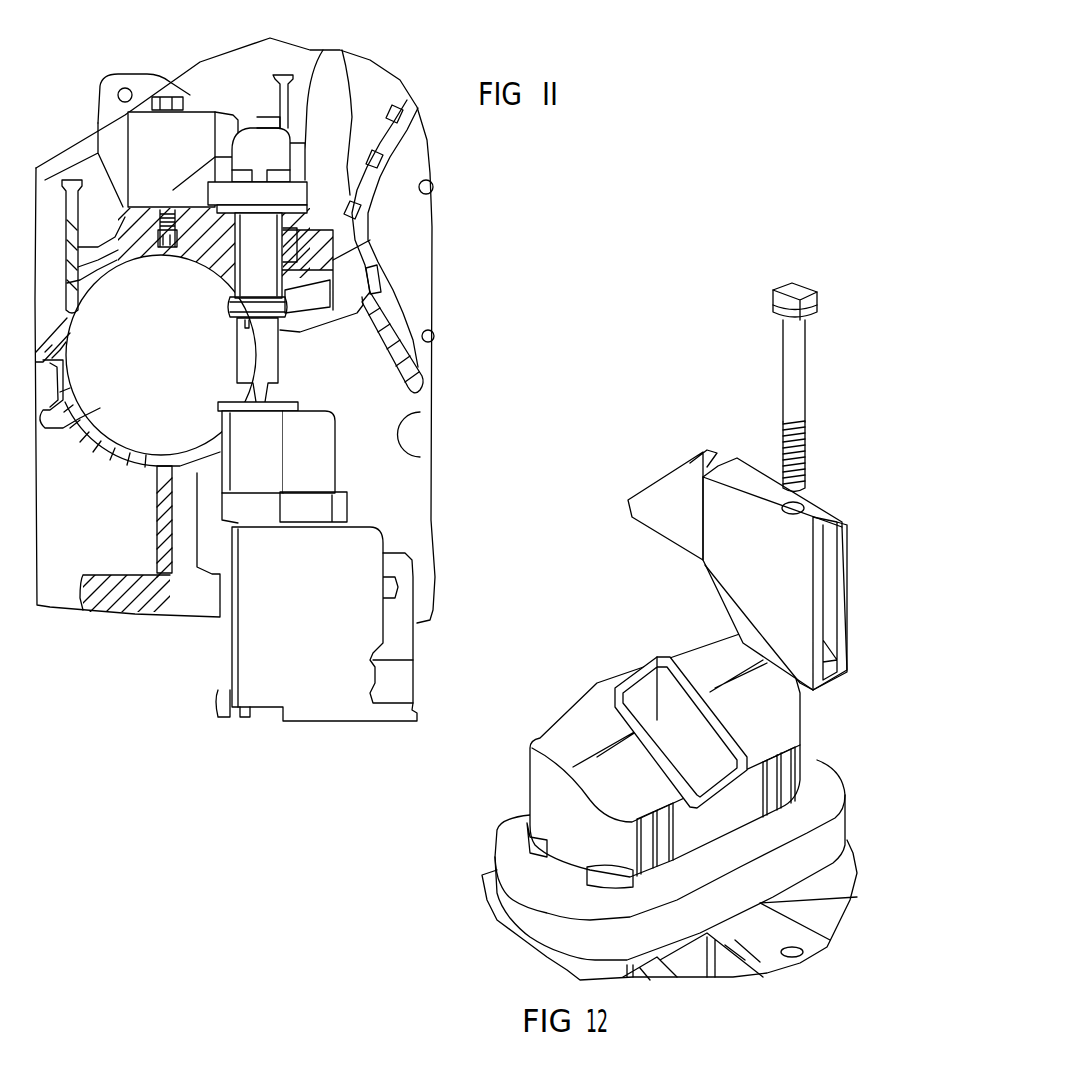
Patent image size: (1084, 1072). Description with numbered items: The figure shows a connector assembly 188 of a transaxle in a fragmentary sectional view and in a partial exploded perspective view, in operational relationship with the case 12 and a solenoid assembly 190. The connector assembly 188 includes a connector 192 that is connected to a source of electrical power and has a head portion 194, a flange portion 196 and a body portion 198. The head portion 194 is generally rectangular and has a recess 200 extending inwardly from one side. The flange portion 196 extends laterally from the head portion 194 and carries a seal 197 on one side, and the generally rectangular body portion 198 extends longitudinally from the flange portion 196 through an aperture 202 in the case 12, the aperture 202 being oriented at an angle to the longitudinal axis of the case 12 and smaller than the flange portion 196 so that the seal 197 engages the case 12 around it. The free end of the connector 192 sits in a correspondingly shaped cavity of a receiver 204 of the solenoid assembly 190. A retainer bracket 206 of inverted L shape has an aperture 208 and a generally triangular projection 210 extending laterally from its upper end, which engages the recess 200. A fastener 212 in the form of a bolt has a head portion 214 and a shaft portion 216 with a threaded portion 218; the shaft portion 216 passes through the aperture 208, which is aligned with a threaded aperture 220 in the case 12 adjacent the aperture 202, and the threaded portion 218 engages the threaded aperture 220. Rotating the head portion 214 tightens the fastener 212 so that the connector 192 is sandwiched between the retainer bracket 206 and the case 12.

In FIG. 11, the case 12 is at (119, 206).
In FIG. 11, the connector assembly 188 is at (214, 104).
In FIG. 11, the solenoid assembly 190 is at (250, 643).
In FIG. 11, the connector 192 is at (290, 140).
In FIG. 12, the connector 192 is at (565, 722).
In FIG. 11, the head portion 194 is at (307, 147).
In FIG. 12, the head portion 194 is at (543, 793).
In FIG. 11, the flange portion 196 is at (300, 190).
In FIG. 12, the flange portion 196 is at (505, 853).
In FIG. 11, the seal 197 is at (303, 209).
In FIG. 11, the body portion 198 is at (273, 260).
In FIG. 12, the recess 200 is at (660, 673).
In FIG. 11, the aperture 202 is at (290, 232).
In FIG. 11, the receiver 204 is at (278, 431).
In FIG. 11, the retainer bracket 206 is at (168, 130).
In FIG. 12, the retainer bracket 206 is at (749, 561).
In FIG. 12, the aperture 208 is at (778, 503).
In FIG. 12, the projection 210 is at (657, 493).
In FIG. 12, the fastener 212 is at (753, 387).
In FIG. 12, the head portion 214 is at (771, 300).
In FIG. 12, the shaft portion 216 is at (782, 380).
In FIG. 12, the threaded portion 218 is at (781, 437).
In FIG. 11, the threaded aperture 220 is at (163, 258).
In FIG. 12, the threaded aperture 220 is at (790, 958).